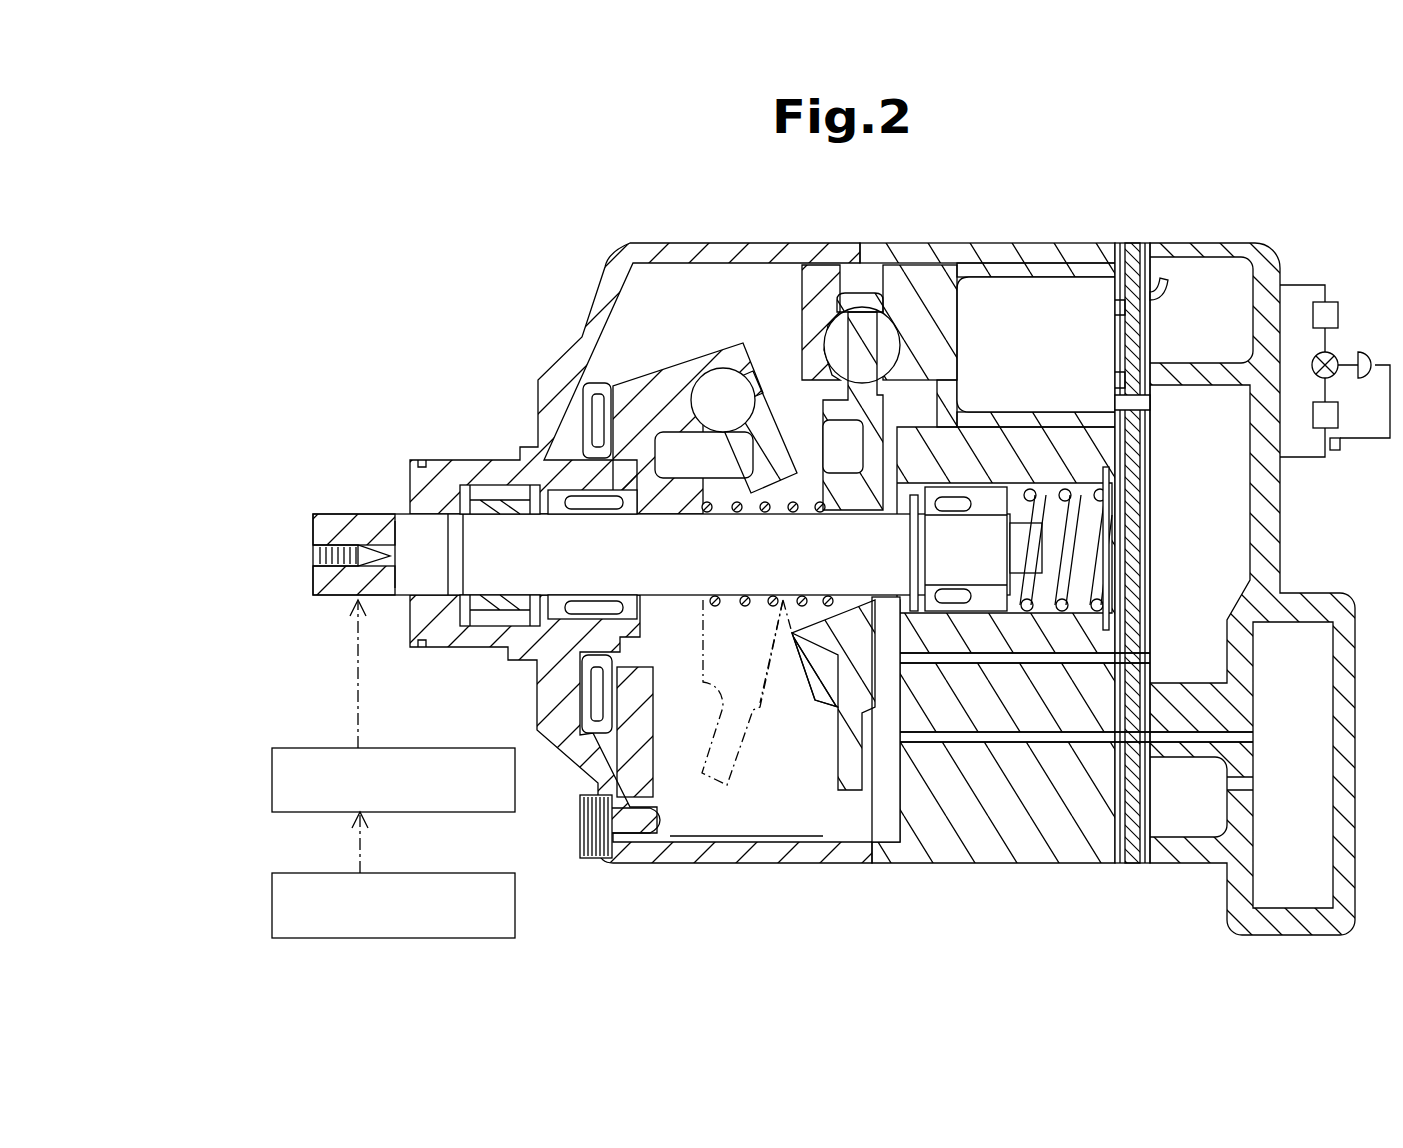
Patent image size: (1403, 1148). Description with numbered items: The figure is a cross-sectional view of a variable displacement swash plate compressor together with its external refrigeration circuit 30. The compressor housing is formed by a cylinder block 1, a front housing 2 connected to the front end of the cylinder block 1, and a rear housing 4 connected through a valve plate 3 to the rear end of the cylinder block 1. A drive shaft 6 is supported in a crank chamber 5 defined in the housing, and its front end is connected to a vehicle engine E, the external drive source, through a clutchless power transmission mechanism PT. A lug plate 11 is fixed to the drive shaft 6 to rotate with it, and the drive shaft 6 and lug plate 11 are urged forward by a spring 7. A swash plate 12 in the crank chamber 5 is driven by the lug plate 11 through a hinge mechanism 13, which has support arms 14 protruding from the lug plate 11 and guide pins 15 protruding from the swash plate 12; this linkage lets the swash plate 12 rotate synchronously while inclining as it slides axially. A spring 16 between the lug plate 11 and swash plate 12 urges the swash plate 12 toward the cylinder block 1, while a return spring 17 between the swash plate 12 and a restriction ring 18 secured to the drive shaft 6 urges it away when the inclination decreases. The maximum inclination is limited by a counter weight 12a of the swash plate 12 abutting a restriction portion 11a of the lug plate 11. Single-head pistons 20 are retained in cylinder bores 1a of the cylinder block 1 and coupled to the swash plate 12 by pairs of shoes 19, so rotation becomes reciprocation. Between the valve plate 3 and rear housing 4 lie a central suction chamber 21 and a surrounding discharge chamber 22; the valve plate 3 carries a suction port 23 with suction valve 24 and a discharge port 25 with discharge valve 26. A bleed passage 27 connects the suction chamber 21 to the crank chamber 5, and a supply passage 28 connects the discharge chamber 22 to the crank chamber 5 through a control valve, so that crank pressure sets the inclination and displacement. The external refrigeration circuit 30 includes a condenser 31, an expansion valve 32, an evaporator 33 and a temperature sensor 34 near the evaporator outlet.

The cylinder block 1 is at (972, 242).
The cylinder bore 1a is at (1020, 268).
The front housing 2 is at (762, 248).
The valve plate 3 is at (1127, 242).
The rear housing 4 is at (1222, 248).
The crank chamber 5 is at (765, 822).
The drive shaft 6 is at (758, 587).
The spring 7 is at (1082, 488).
The lug plate 11 is at (645, 392).
The restriction portion 11a is at (690, 635).
The swash plate 12 is at (840, 733).
The counter weight 12a is at (810, 675).
The hinge mechanism 13 is at (653, 287).
The support arm 14 is at (668, 383).
The guide pin 15 is at (768, 425).
The spring 16 is at (790, 497).
The return spring 17 is at (895, 580).
The restriction ring 18 is at (908, 538).
The shoes 19 is at (840, 295).
The single-head piston 20 is at (905, 280).
The suction chamber 21 is at (1172, 510).
The discharge chamber 22 is at (1248, 280).
The suction port 23 is at (1143, 403).
The suction valve 24 is at (1115, 380).
The discharge port 25 is at (1115, 306).
The discharge valve 26 is at (1160, 300).
The bleed passage 27 is at (973, 667).
The supply passage 28 is at (1012, 745).
The external refrigeration circuit 30 is at (1330, 272).
The condenser 31 is at (1340, 305).
The expansion valve 32 is at (1340, 352).
The evaporator 33 is at (1340, 410).
The temperature sensor 34 is at (1338, 450).
The power transmission mechanism PT is at (460, 748).
The vehicle engine E is at (456, 873).